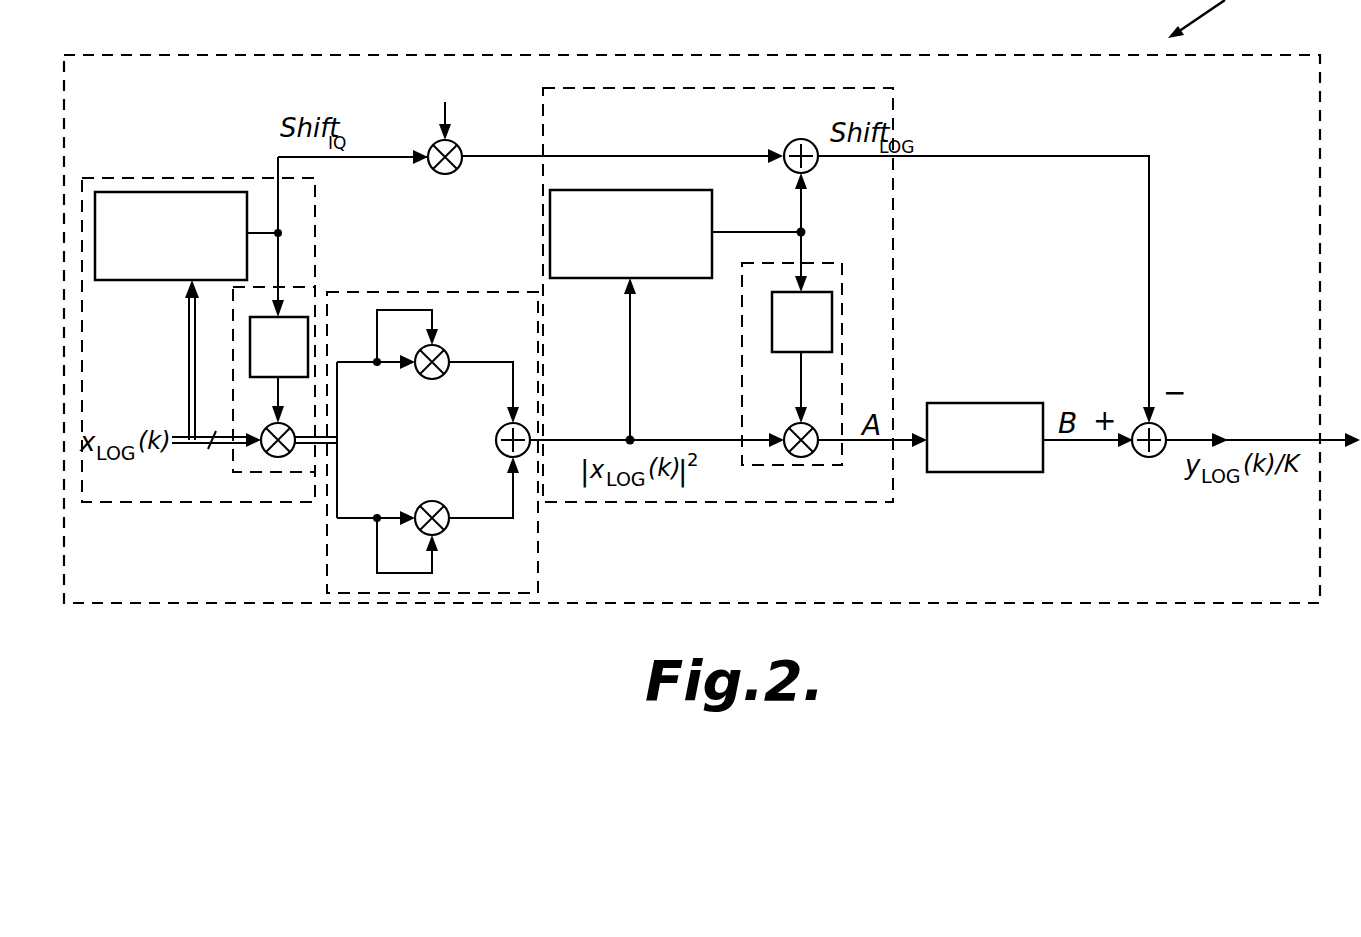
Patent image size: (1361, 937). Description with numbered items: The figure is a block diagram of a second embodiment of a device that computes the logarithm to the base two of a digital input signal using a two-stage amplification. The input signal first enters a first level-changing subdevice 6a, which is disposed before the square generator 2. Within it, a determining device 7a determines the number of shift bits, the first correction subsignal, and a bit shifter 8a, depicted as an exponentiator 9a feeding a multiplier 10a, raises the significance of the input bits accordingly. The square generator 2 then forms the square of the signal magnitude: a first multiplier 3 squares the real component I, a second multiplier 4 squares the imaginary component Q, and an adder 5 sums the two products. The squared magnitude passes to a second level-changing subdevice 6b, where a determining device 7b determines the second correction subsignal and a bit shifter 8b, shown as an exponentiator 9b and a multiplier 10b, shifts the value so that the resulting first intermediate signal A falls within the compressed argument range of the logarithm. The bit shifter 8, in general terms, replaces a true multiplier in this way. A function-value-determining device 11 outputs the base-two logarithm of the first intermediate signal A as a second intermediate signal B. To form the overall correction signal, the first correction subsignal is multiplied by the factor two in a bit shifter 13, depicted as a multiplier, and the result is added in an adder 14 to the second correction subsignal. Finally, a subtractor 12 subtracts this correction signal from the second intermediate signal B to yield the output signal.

The square generator 2 is at (396, 448).
The first multiplier 3 is at (432, 378).
The second multiplier 4 is at (440, 526).
The adder 5 is at (500, 450).
The first level-changing subdevice 6a is at (133, 178).
The second level-changing subdevice 6b is at (703, 88).
The determining device 7a is at (205, 192).
The determining device 7b is at (645, 190).
The bit shifter 8 is at (740, 383).
The bit shifter 8a is at (233, 393).
The bit shifter 8b is at (830, 465).
The exponentiator 9a is at (250, 340).
The exponentiator 9b is at (832, 312).
The multiplier 10a is at (283, 457).
The multiplier 10b is at (800, 452).
The function-value-determining device 11 is at (950, 472).
The subtractor 12 is at (1140, 456).
The bit shifter 13 is at (450, 146).
The adder 14 is at (798, 138).